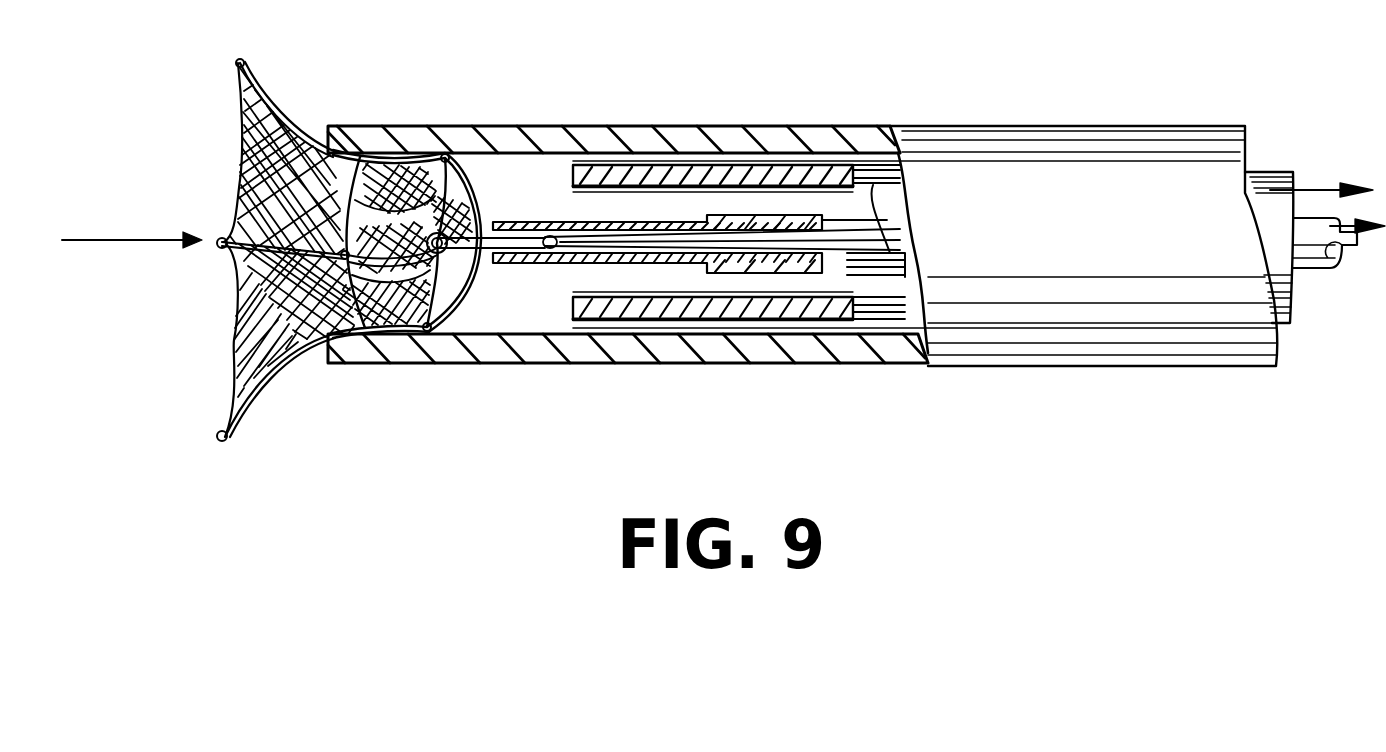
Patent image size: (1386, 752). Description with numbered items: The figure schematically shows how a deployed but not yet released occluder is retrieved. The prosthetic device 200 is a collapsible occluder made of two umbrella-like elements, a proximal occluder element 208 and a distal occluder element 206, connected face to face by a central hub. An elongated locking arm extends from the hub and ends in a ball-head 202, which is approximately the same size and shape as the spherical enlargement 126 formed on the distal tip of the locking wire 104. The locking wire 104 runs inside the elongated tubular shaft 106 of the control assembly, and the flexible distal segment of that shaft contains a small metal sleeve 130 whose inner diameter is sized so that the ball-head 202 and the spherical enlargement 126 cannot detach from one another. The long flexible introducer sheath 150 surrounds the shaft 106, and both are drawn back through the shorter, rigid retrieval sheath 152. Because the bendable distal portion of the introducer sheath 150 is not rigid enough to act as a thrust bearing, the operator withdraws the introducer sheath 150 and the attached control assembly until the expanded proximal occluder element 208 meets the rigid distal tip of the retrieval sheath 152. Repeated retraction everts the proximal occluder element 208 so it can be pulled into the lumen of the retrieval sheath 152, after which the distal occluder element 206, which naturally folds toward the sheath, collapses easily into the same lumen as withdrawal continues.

The prosthetic device 200 is at (210, 179).
The distal occluder element 206 is at (267, 103).
The proximal occluder element 208 is at (480, 150).
The retrieval sheath 152 is at (622, 128).
The spherical enlargement 126 is at (548, 232).
The ball-head 202 is at (555, 263).
The small metal sleeve 130 is at (592, 300).
The introducer sheath 150 is at (655, 305).
The elongated tubular shaft 106 is at (860, 253).
The locking wire 104 is at (1350, 246).